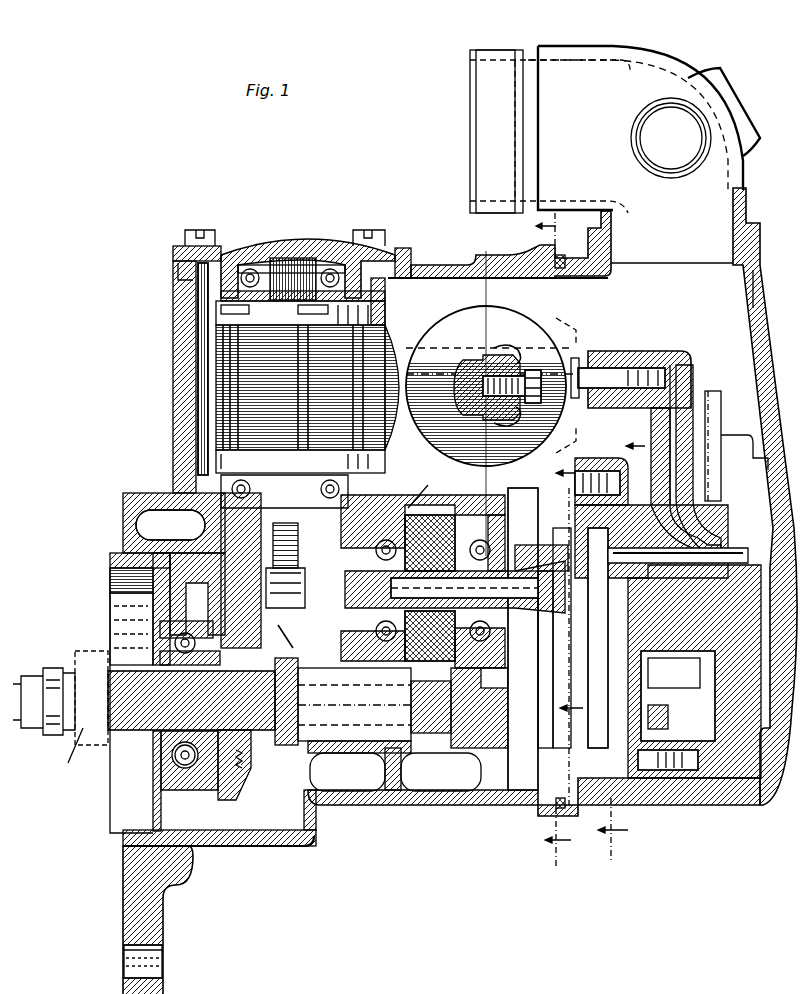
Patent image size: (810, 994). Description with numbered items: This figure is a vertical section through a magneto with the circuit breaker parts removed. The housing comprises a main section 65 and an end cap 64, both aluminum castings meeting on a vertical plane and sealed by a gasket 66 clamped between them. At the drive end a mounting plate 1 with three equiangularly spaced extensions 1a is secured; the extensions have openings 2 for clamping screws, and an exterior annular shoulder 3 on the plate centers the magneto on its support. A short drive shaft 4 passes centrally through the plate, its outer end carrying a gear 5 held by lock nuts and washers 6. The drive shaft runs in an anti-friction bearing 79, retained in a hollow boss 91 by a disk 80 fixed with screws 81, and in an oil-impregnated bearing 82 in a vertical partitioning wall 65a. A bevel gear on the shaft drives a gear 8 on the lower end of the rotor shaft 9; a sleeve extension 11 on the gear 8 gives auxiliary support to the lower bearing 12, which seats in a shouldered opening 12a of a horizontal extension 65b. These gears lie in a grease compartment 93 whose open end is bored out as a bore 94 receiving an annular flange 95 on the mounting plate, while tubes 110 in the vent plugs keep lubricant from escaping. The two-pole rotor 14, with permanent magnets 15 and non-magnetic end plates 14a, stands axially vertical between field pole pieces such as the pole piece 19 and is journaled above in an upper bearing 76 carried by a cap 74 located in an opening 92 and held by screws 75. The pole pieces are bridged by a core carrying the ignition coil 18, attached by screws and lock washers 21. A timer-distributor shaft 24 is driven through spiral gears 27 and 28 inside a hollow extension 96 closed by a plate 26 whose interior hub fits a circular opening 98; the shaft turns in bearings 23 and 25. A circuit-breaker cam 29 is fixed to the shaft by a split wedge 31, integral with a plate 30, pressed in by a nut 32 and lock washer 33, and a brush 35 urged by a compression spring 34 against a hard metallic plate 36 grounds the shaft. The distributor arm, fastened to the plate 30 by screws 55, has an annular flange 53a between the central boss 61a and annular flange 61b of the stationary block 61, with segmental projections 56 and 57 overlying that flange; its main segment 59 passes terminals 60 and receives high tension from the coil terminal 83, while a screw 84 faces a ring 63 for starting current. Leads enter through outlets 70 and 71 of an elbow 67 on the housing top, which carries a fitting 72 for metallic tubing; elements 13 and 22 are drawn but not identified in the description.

The mounting plate 1 is at (112, 860).
The extensions 1a is at (156, 900).
The openings 2 is at (150, 960).
The exterior annular shoulder 3 is at (105, 528).
The drive shaft 4 is at (318, 540).
The gear 5 is at (70, 650).
The lock nuts and washers 6 is at (40, 722).
The gear 8 is at (430, 639).
The rotor shaft 9 is at (225, 478).
The sleeve extension 11 is at (200, 530).
The lower bearing 12 is at (225, 473).
The shouldered opening 12a is at (118, 500).
The armature end plate 13 is at (192, 445).
The rotor 14 is at (205, 360).
The non-magnetic end plates 14a is at (195, 304).
The permanent magnets 15 is at (378, 300).
The ignition coil 18 is at (520, 312).
The field pole piece 19 is at (390, 332).
The screws and spring lock washers 21 is at (520, 362).
The ball bearing 22 is at (390, 530).
The bearing 23 is at (278, 600).
The timer-distributor shaft 24 is at (515, 535).
The bearing 25 is at (478, 528).
The plate 26 is at (505, 740).
The spiral gear 27 is at (440, 505).
The spiral gear 28 is at (440, 725).
The circuit-breaker cam 29 is at (535, 600).
The plate 30 is at (572, 500).
The split cylindrical wedge 31 is at (548, 535).
The nut 32 is at (575, 600).
The lock washer 33 is at (572, 512).
The compression spring 34 is at (415, 590).
The brush 35 is at (295, 545).
The hard metallic plate 36 is at (295, 560).
The annular flange 53a is at (700, 535).
The screws 55 is at (592, 462).
The arcuate segmental projection 56 is at (688, 400).
The arcuate segmental projection 57 is at (658, 690).
The main segment 59 is at (592, 790).
The terminals 60 is at (635, 765).
The stationary block 61 is at (705, 796).
The central boss 61a is at (585, 640).
The concentric annular flange 61b is at (700, 670).
The ring 63 is at (715, 440).
The end cap 64 is at (745, 330).
The main housing section 65 is at (470, 796).
The vertical partitioning wall 65a is at (359, 766).
The horizontal extension 65b is at (145, 547).
The gasket 66 is at (545, 238).
The elbow 67 is at (740, 215).
The outlet 70 is at (727, 98).
The outlet 71 is at (672, 108).
The fitting 72 is at (488, 60).
The cap 74 is at (288, 238).
The screws 75 is at (185, 225).
The upper bearing 76 is at (233, 255).
The bearing 79 is at (153, 775).
The disk 80 is at (140, 592).
The screws 81 is at (128, 622).
The bearing 82 is at (290, 750).
The high tension terminal 83 is at (575, 360).
The screw 84 is at (648, 660).
The hollow boss 91 is at (222, 790).
The opening 92 is at (172, 258).
The grease compartment 93 is at (268, 822).
The bore 94 is at (140, 818).
The annular flange 95 is at (128, 572).
The hollow extension 96 is at (470, 740).
The circular opening 98 is at (523, 724).
The tubes 110 is at (290, 668).